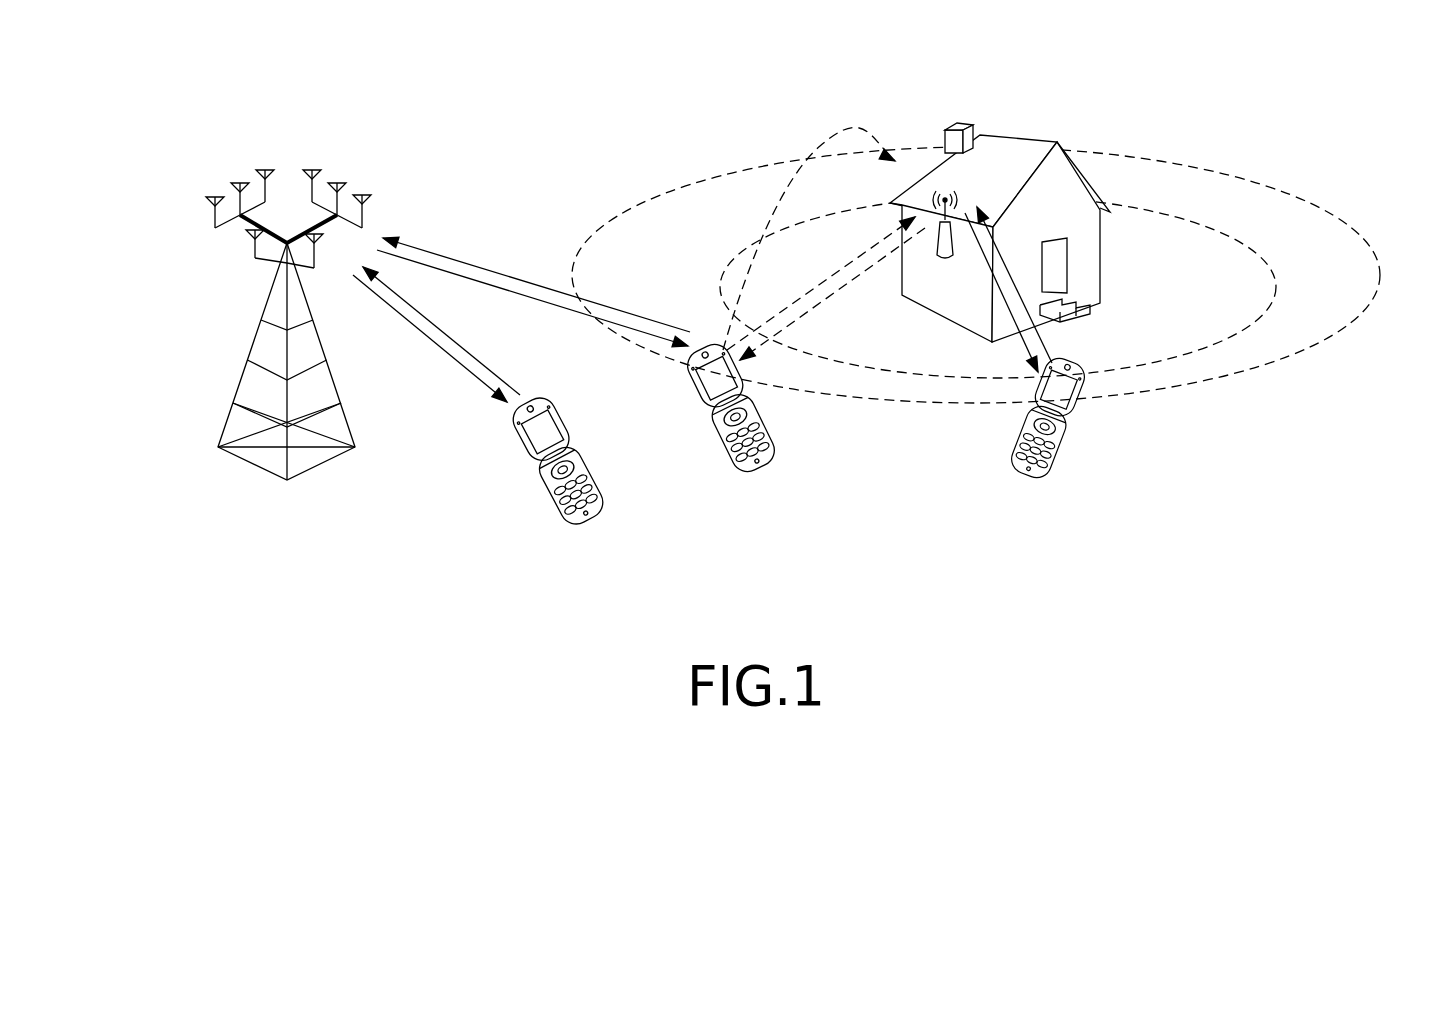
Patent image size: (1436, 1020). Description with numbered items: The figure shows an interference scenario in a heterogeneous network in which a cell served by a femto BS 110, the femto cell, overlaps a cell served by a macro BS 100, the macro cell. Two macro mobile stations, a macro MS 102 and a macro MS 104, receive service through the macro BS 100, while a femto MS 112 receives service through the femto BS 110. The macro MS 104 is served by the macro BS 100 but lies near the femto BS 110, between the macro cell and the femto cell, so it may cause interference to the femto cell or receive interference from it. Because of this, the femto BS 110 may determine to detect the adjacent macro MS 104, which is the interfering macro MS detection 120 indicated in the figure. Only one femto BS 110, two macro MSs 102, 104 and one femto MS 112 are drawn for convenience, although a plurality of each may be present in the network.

The macro BS 100 is at (352, 422).
The macro MS 102 is at (563, 422).
The macro MS 104 is at (760, 427).
The femto BS 110 is at (981, 187).
The femto MS 112 is at (1088, 411).
The detection of the adjacent macro MS 120 is at (910, 74).